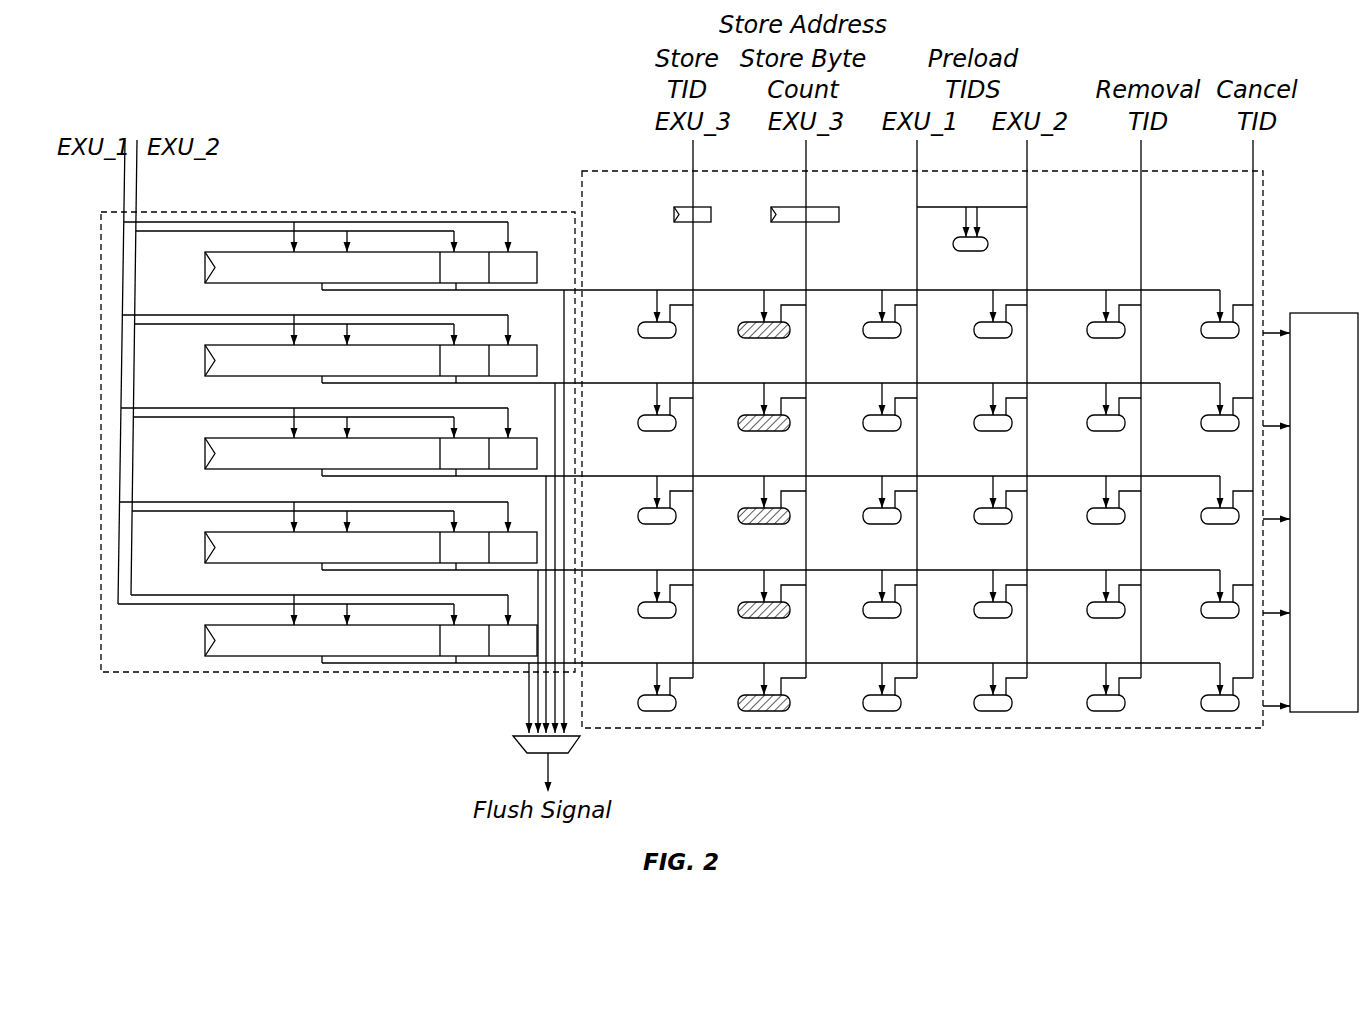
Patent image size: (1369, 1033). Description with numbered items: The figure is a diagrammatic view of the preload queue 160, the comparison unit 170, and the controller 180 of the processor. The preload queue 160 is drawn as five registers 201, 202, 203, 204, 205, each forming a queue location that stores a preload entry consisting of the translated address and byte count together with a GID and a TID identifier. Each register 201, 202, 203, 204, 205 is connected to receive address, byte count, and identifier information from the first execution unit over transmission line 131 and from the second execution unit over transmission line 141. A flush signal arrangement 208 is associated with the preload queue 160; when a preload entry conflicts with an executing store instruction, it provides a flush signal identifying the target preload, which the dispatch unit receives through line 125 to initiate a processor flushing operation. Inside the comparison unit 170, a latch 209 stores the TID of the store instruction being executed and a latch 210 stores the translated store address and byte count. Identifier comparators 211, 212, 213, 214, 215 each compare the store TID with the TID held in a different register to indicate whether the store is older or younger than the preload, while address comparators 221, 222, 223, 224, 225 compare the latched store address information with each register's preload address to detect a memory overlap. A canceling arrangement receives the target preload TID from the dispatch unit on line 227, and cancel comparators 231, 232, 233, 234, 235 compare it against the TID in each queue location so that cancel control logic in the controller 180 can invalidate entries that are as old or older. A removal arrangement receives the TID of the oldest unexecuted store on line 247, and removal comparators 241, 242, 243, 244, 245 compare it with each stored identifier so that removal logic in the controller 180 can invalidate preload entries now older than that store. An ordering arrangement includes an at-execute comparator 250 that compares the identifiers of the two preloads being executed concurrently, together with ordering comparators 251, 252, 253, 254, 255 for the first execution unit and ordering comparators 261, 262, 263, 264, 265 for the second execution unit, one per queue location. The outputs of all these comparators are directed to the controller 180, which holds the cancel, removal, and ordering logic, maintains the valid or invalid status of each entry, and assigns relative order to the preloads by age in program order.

The line 125 is at (549, 762).
The transmission line 131 is at (122, 191).
The transmission line 141 is at (138, 198).
The preload queue 160 is at (293, 211).
The comparison unit 170 is at (608, 170).
The controller 180 is at (1305, 561).
The register 201 is at (203, 262).
The register 202 is at (338, 352).
The register 203 is at (338, 445).
The register 204 is at (338, 539).
The register 205 is at (338, 632).
The flush signal arrangement 208 is at (504, 752).
The latch 209 is at (682, 207).
The latch 210 is at (789, 206).
The identifier comparator 211 is at (647, 322).
The identifier comparator 212 is at (641, 407).
The identifier comparator 213 is at (641, 500).
The identifier comparator 214 is at (641, 594).
The identifier comparator 215 is at (641, 687).
The address comparator 221 is at (754, 322).
The address comparator 222 is at (754, 407).
The address comparator 223 is at (754, 500).
The address comparator 224 is at (754, 594).
The address comparator 225 is at (754, 687).
The line 227 is at (1253, 205).
The cancel comparator 231 is at (1210, 322).
The cancel comparator 232 is at (1202, 407).
The cancel comparator 233 is at (1202, 500).
The cancel comparator 234 is at (1202, 594).
The cancel comparator 235 is at (1202, 687).
The removal comparator 241 is at (1096, 322).
The removal comparator 242 is at (1089, 407).
The removal comparator 243 is at (1089, 500).
The removal comparator 244 is at (1089, 594).
The removal comparator 245 is at (1089, 687).
The line 247 is at (1140, 205).
The at-execute comparator 250 is at (978, 253).
The ordering comparator 251 is at (872, 322).
The ordering comparator 252 is at (865, 407).
The ordering comparator 253 is at (865, 500).
The ordering comparator 254 is at (865, 594).
The ordering comparator 255 is at (865, 687).
The ordering comparator 261 is at (983, 322).
The ordering comparator 262 is at (976, 407).
The ordering comparator 263 is at (976, 500).
The ordering comparator 264 is at (976, 594).
The ordering comparator 265 is at (976, 687).